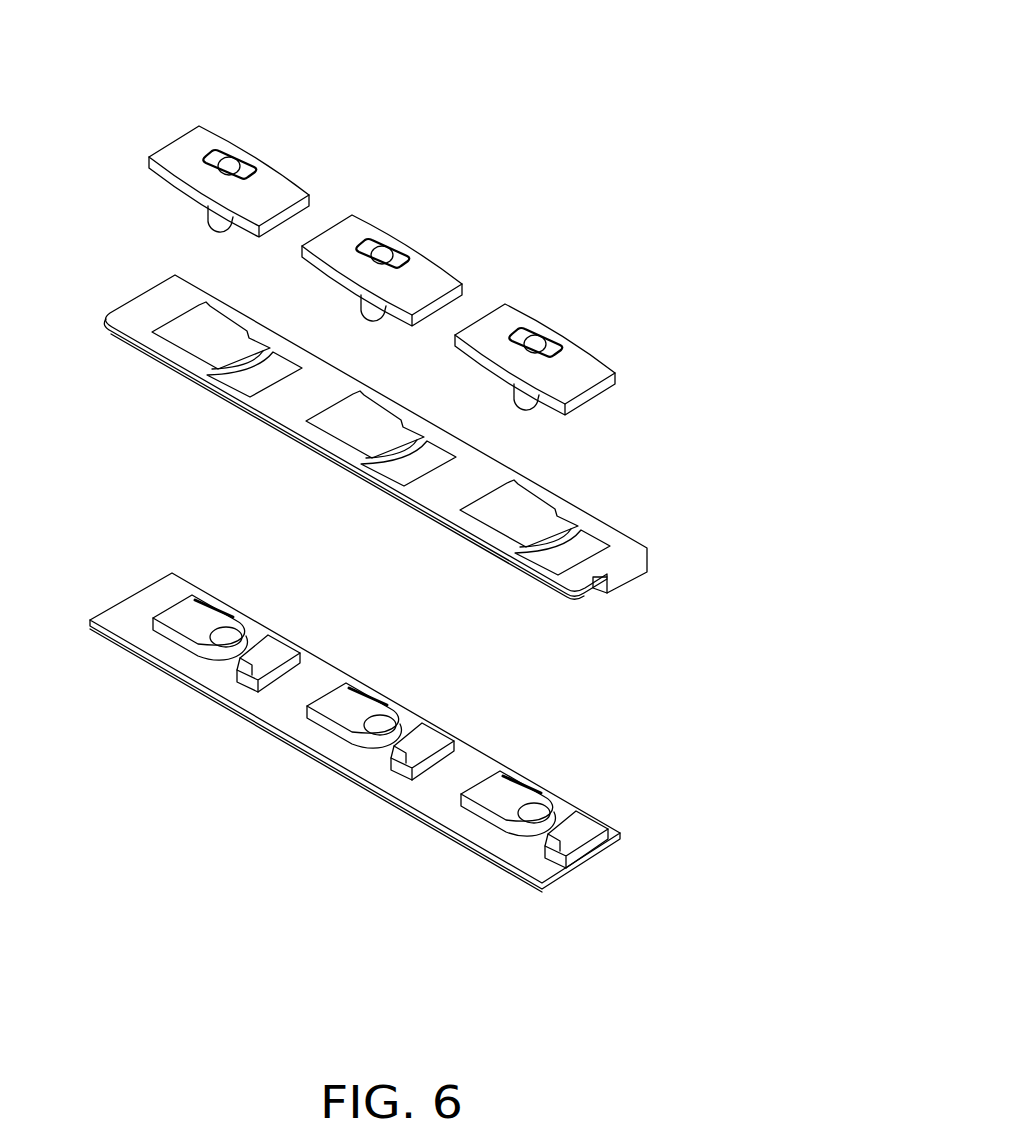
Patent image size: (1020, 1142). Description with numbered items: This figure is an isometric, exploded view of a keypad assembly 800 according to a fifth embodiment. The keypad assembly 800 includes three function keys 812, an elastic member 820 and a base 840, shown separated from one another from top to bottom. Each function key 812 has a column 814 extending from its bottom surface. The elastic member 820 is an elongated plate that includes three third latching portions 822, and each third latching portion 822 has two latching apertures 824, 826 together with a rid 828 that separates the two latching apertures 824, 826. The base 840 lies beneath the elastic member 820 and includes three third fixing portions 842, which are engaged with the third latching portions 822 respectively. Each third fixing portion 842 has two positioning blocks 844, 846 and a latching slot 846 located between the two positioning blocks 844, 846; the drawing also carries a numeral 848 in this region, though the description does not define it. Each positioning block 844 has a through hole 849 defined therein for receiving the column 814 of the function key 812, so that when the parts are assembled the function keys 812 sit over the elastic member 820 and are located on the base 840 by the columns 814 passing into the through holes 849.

The keypad assembly 800 is at (392, 42).
The function key 812 is at (277, 182).
The column 814 is at (215, 218).
The elastic member 820 is at (390, 437).
The third latching portion 822 is at (182, 385).
The latching aperture 824 is at (187, 343).
The latching aperture 826 is at (248, 386).
The rid 828 is at (237, 372).
The base 840 is at (387, 709).
The third fixing portion 842 is at (270, 609).
The positioning block 844 is at (202, 620).
The positioning block 846 is at (283, 655).
The step portion 848 is at (257, 647).
The through hole 849 is at (383, 723).